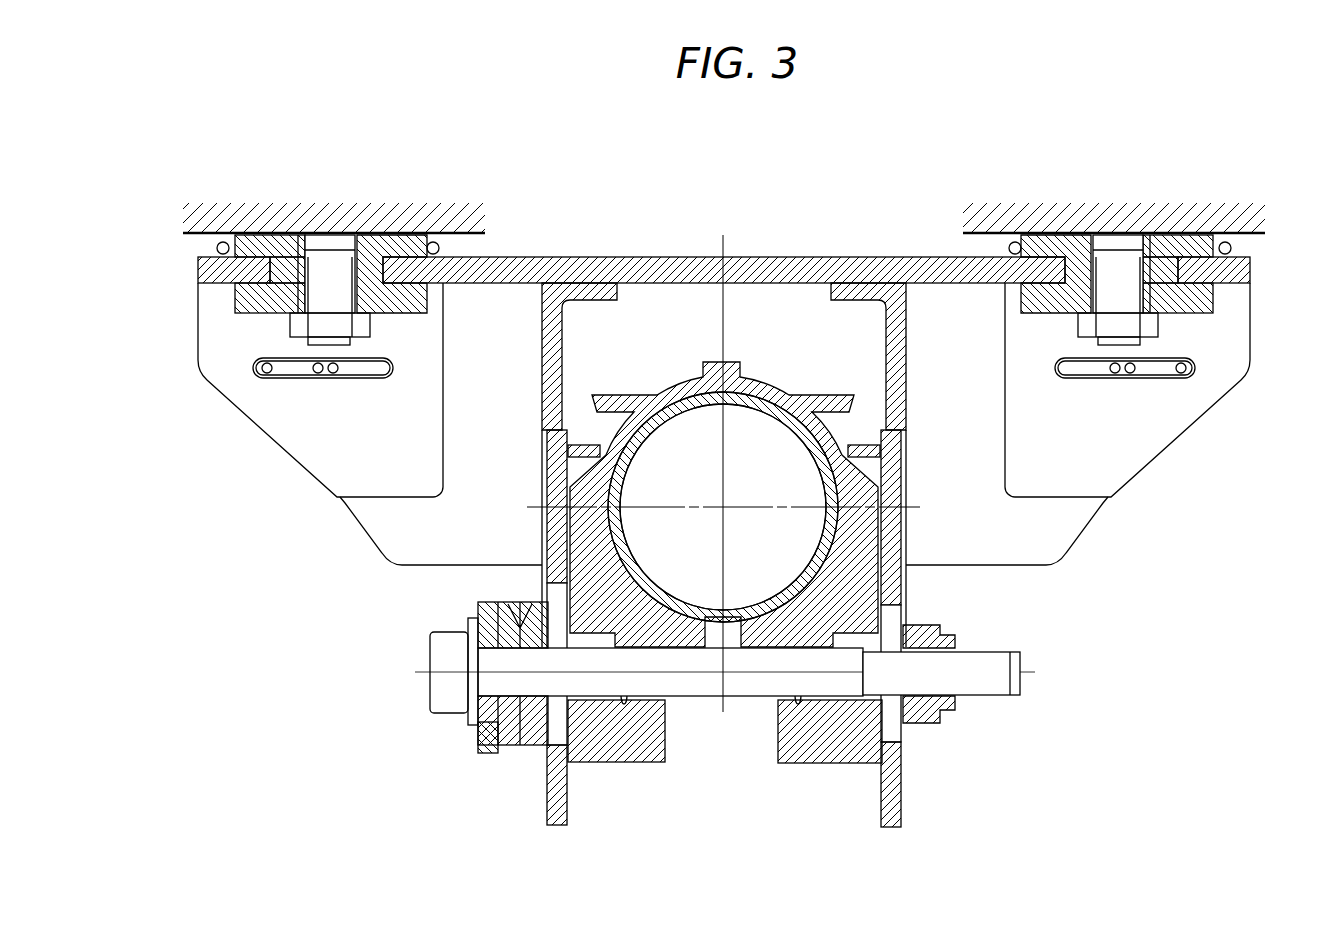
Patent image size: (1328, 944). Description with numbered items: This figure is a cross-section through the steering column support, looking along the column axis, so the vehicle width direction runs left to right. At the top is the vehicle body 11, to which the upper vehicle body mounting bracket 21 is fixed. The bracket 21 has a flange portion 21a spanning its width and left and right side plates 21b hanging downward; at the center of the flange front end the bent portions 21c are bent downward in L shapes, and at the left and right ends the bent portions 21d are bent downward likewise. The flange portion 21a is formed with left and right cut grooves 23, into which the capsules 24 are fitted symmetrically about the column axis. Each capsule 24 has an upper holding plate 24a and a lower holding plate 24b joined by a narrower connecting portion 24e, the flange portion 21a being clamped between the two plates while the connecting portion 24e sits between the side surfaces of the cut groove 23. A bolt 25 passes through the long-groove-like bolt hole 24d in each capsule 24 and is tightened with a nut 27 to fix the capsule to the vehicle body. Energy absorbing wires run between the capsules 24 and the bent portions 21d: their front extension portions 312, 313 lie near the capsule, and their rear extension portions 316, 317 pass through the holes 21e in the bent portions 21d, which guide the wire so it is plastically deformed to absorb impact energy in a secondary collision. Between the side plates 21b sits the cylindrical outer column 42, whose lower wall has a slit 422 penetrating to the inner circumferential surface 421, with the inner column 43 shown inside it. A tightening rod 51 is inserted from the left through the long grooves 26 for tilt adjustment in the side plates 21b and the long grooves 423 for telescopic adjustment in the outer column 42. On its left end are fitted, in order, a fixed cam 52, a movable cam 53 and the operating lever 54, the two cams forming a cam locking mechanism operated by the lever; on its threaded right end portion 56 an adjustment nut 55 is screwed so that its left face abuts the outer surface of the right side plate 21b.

The installation surface 11 is at (458, 220).
The upper vehicle body mounting bracket 21 is at (716, 401).
The flange portion 21a is at (753, 262).
The side plates 21b is at (541, 480).
The bent portions 21c is at (426, 566).
The bent portions 21d is at (213, 374).
The holes 21e is at (266, 374).
The cut grooves 23 is at (365, 254).
The capsules 24 is at (725, 253).
The upper holding plates 24a is at (262, 240).
The lower holding plates 24b is at (234, 298).
The bolt holes 24d is at (340, 238).
The connecting portions 24e is at (302, 233).
The bolts 25 is at (318, 238).
The long grooves for tilt adjustment 26 is at (562, 746).
The nuts 27 is at (300, 322).
The front extension portion 312 is at (432, 242).
The front extension portion 313 is at (223, 242).
The rear extension portion 316 is at (334, 374).
The rear extension portion 317 is at (318, 374).
The outer column 42 is at (723, 528).
The inner circumferential surface 421 is at (776, 412).
The slit 422 is at (731, 630).
The long grooves for telescopic adjustment 423 is at (624, 704).
The inner column 43 is at (725, 572).
The tightening rod 51 is at (685, 686).
The bearing 52 is at (537, 745).
The movable cam 53 is at (520, 603).
The operating lever 54 is at (483, 754).
The adjustment nut 55 is at (925, 626).
The shaft end portion 56 is at (995, 697).